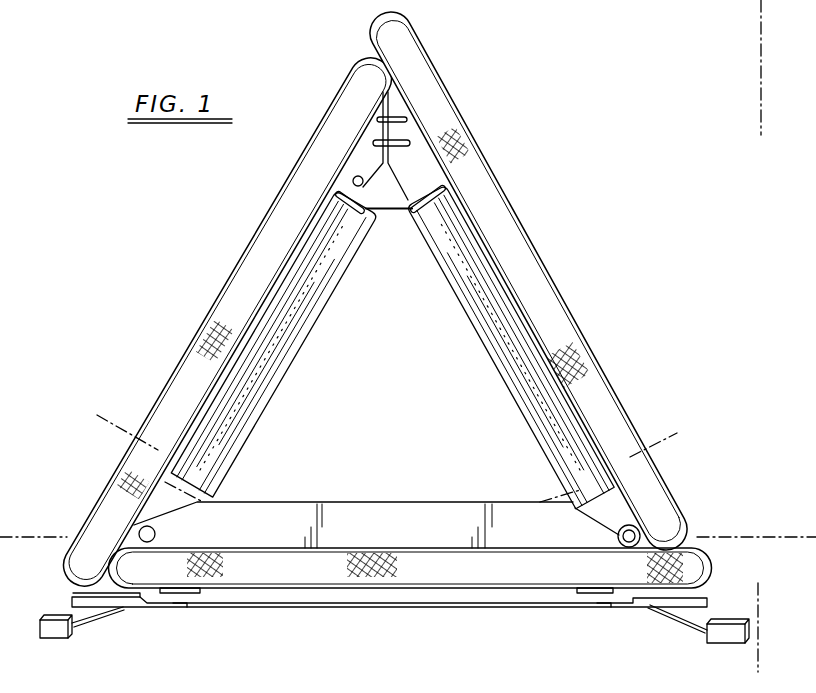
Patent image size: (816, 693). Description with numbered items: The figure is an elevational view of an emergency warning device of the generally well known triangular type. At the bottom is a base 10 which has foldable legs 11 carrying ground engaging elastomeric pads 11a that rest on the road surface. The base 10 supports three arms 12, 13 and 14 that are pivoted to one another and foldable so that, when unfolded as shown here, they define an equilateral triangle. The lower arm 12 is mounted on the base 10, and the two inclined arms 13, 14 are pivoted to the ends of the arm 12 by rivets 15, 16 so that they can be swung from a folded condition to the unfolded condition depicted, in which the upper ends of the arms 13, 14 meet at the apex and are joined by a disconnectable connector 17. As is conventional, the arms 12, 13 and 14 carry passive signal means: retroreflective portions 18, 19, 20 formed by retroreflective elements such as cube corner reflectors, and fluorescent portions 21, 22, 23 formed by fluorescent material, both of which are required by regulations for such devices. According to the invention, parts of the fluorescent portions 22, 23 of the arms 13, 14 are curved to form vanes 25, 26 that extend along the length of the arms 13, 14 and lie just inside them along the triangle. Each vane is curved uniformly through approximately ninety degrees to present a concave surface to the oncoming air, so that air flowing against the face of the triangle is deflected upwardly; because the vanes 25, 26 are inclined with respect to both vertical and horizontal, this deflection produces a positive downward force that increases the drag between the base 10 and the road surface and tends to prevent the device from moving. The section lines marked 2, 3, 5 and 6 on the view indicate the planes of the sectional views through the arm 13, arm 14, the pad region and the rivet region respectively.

The base 10 is at (382, 607).
The foldable legs 11 is at (93, 620).
The ground engaging elastomeric pads 11a is at (50, 627).
The arm 12 is at (317, 565).
The arm 13 is at (242, 300).
The arm 14 is at (517, 273).
The rivet 15 is at (156, 533).
The rivet 16 is at (616, 537).
The disconnectable connector 17 is at (398, 132).
The reflective portion 18 is at (472, 573).
The reflective portion 19 is at (200, 380).
The reflective portion 20 is at (560, 332).
The fluorescent portion 21 is at (430, 512).
The fluorescent portion 22 is at (360, 212).
The fluorescent portion 23 is at (410, 199).
The vane 25 is at (252, 393).
The vane 26 is at (510, 347).
The section line 2- 2 is at (147, 387).
The section line 3- 3 is at (643, 410).
The section line 5- 5 is at (758, 660).
The section line 6- 6 is at (13, 498).